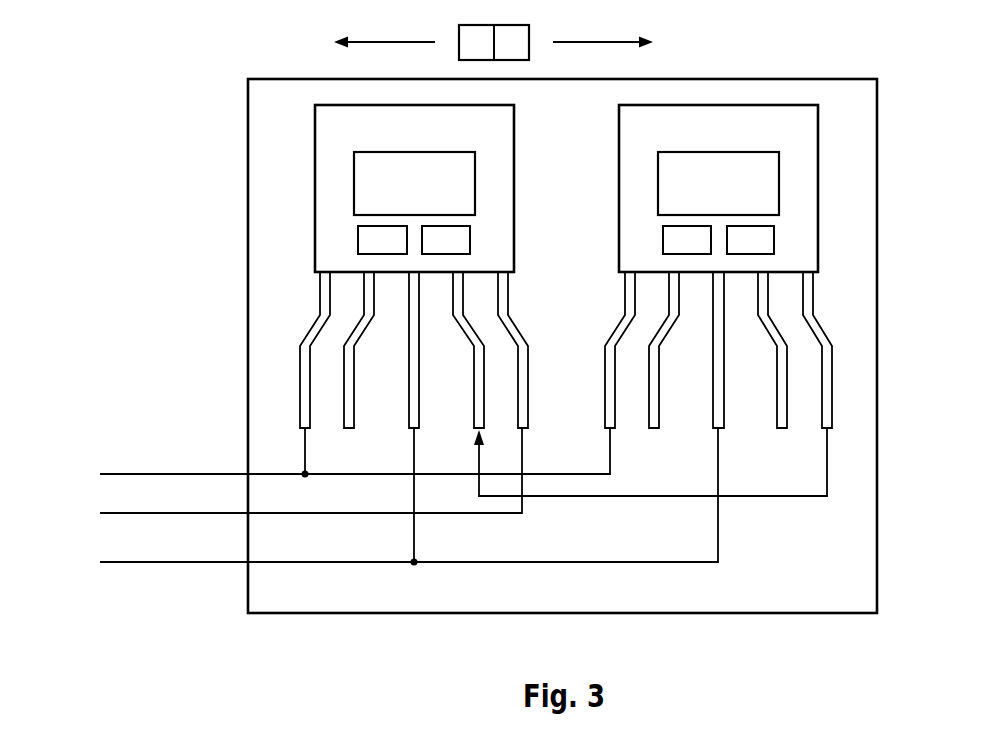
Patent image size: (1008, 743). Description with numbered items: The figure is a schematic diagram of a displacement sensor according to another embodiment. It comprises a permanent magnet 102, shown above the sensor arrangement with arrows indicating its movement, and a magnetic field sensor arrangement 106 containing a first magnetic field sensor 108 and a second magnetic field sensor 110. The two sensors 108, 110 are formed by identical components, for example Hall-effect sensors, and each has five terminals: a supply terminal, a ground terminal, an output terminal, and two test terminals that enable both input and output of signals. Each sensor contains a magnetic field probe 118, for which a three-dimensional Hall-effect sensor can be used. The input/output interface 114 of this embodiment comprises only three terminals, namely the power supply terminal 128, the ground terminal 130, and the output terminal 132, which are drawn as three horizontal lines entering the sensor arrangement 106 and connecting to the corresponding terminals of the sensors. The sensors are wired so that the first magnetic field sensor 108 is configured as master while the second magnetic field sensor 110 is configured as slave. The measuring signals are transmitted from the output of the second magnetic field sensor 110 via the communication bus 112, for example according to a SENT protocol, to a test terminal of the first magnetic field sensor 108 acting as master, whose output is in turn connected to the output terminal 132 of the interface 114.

The permanent magnet 102 is at (502, 25).
The magnetic field sensor arrangement 106 is at (822, 613).
The first magnetic field sensor 108 is at (314, 216).
The second magnetic field sensor 110 is at (618, 192).
The communication bus 112 is at (770, 497).
The input/output interface 114 is at (368, 509).
The magnetic field probe 118 is at (365, 197).
The power supply terminal 128 is at (233, 474).
The ground terminal 130 is at (92, 474).
The output terminal 132 is at (240, 514).